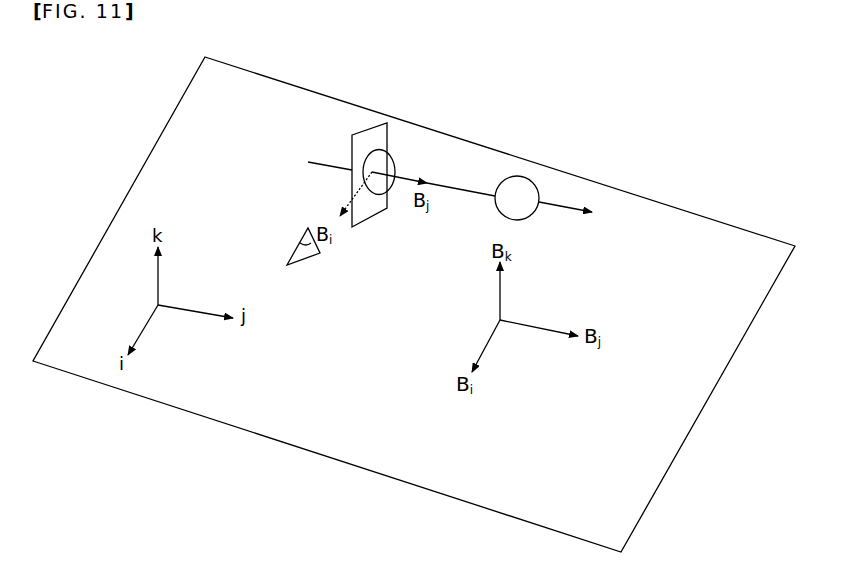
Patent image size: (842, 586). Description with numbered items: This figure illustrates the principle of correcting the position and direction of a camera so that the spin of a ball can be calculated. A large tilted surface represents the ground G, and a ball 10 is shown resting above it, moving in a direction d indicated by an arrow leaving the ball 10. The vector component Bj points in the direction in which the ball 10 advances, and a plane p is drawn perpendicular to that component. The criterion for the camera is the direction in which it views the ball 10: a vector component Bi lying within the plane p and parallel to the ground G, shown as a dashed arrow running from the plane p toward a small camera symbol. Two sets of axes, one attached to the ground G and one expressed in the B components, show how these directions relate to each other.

The ball 10 is at (522, 177).
The plane p is at (330, 152).
The direction d is at (575, 212).
The ground G is at (285, 373).